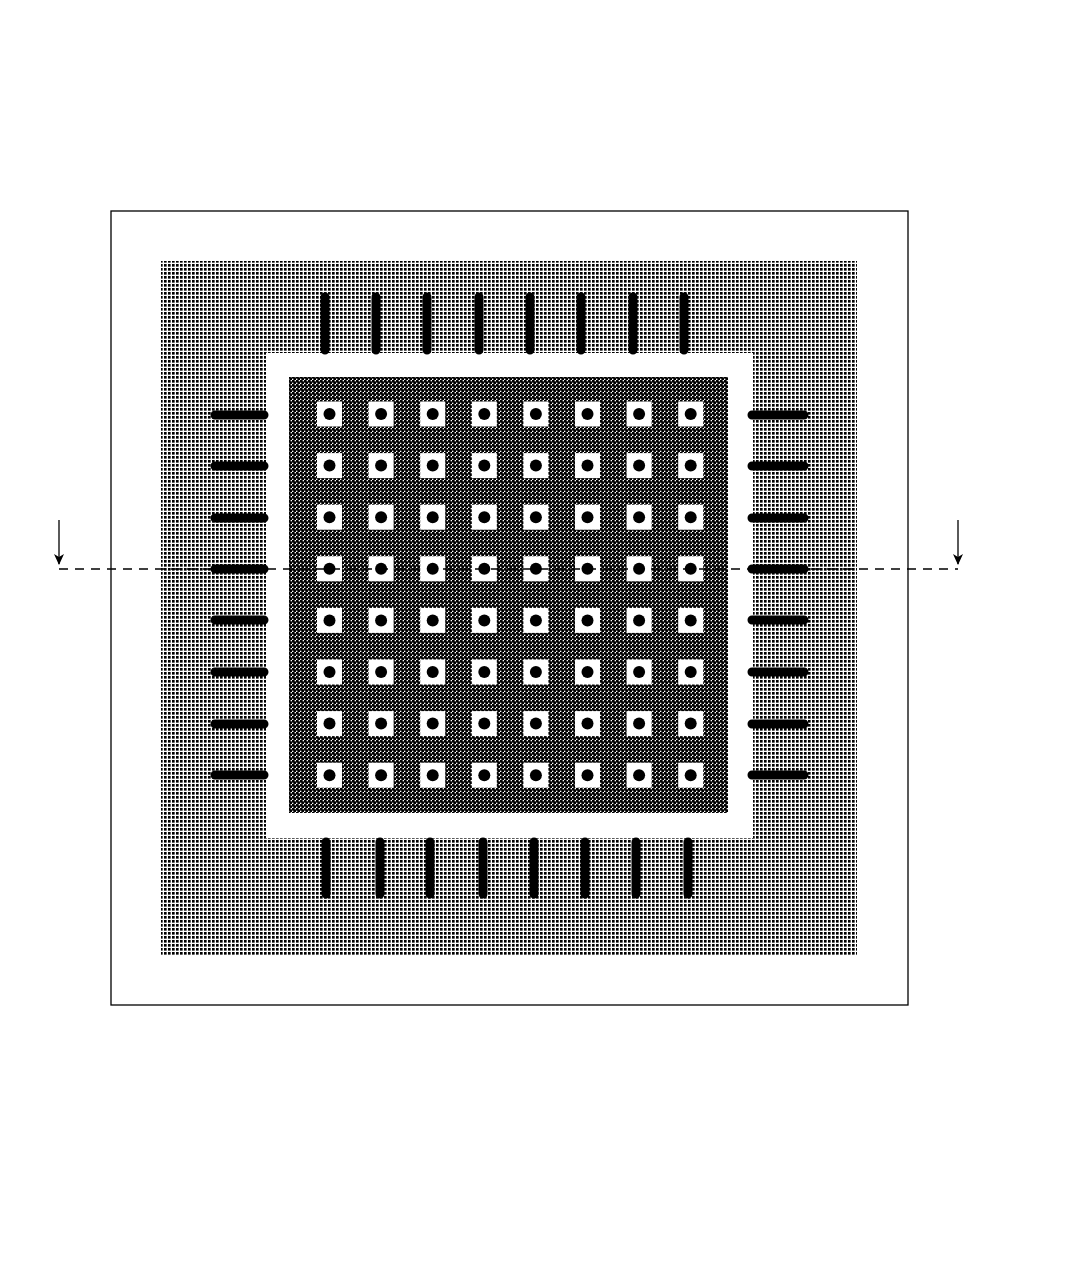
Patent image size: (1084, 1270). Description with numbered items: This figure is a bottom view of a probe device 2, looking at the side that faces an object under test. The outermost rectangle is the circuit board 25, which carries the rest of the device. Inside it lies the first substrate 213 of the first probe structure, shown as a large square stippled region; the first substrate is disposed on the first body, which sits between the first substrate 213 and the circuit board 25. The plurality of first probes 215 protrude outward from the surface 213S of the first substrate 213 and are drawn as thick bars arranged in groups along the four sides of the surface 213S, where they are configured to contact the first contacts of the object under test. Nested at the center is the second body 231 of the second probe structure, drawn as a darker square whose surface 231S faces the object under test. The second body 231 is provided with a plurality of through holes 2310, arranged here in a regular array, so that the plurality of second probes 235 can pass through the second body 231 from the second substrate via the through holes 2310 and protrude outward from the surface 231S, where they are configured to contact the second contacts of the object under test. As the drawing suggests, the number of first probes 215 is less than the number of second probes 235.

The probe device 2 is at (190, 98).
The circuit board 25 is at (730, 203).
The first substrate 213 is at (455, 549).
The surface of the first substrate 213S is at (200, 328).
The first probes 215 is at (305, 890).
The second body 231 is at (485, 612).
The surface of the second body 231S is at (403, 792).
The through holes 2310 is at (673, 778).
The second probes 235 is at (721, 806).